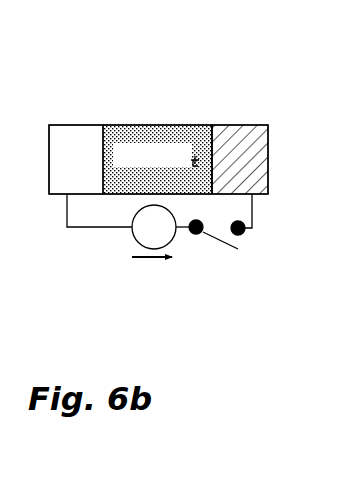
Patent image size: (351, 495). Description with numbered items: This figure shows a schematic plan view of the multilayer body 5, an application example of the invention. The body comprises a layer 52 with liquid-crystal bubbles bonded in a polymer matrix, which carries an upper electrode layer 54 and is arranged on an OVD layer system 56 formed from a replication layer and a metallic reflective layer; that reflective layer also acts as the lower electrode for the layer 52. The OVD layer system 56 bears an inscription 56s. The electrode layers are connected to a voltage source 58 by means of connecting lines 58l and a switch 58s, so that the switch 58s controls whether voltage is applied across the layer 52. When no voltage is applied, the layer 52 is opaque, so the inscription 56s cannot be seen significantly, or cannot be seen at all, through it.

The multilayer body 5 is at (91, 97).
The layer with liquid-crystal bubbles 52 is at (122, 127).
The upper electrode layer 54 is at (69, 136).
The OVD layer system 56 is at (262, 146).
The inscription 56s is at (207, 127).
The voltage source 58 is at (147, 270).
The connecting lines 58l is at (110, 232).
The switch 58s is at (215, 248).